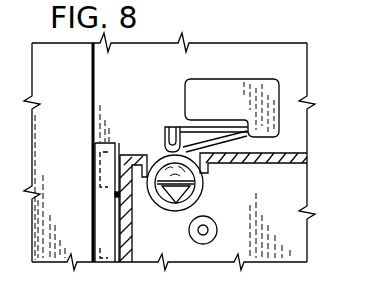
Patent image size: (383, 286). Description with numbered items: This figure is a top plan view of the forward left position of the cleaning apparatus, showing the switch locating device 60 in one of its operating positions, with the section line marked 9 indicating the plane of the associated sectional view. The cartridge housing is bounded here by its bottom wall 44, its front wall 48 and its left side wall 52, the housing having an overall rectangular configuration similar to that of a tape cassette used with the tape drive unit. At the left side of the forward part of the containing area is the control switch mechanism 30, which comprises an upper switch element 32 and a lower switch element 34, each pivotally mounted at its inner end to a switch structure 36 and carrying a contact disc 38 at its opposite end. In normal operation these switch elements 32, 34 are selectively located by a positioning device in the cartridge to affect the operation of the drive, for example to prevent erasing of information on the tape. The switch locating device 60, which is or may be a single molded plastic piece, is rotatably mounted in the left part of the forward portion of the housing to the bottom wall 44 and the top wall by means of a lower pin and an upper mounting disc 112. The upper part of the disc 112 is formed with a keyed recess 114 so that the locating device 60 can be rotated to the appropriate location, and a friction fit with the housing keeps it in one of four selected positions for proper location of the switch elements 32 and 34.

The control switch mechanism 30 is at (283, 81).
The switch structure 36 is at (270, 97).
The lower switch element 34 is at (198, 136).
The upper switch element 32 is at (186, 128).
The contact disc 38 is at (163, 143).
The side wall 52 is at (113, 217).
The front wall 48 is at (293, 158).
The switch locating device 60 is at (212, 175).
The upper mounting disc 112 is at (195, 184).
The keyed recess 114 is at (189, 192).
The bottom wall 44 is at (290, 235).
The section line 9- 9 is at (200, 60).